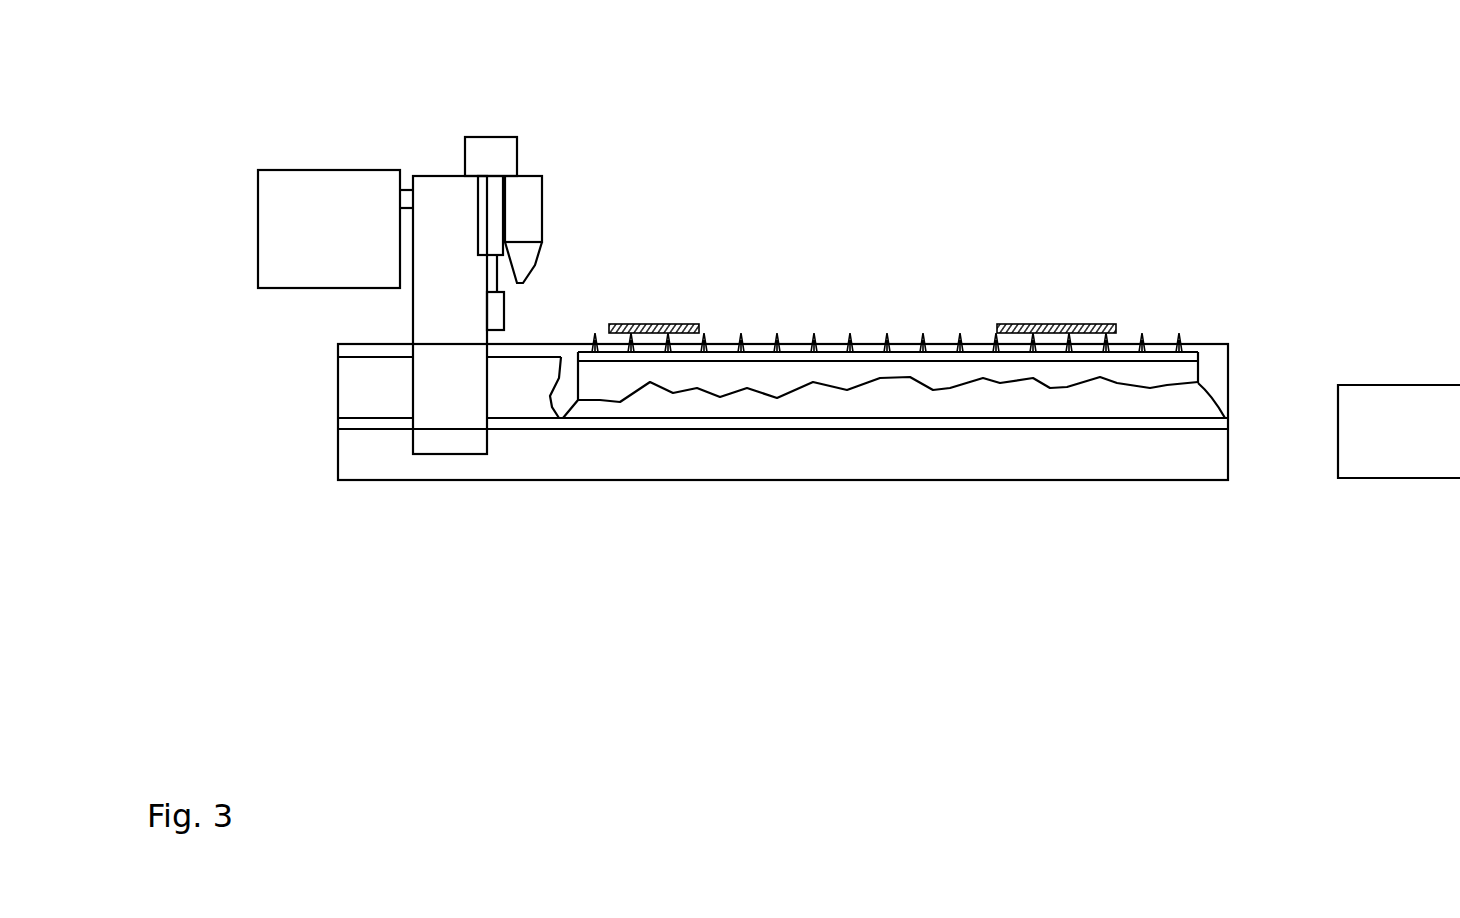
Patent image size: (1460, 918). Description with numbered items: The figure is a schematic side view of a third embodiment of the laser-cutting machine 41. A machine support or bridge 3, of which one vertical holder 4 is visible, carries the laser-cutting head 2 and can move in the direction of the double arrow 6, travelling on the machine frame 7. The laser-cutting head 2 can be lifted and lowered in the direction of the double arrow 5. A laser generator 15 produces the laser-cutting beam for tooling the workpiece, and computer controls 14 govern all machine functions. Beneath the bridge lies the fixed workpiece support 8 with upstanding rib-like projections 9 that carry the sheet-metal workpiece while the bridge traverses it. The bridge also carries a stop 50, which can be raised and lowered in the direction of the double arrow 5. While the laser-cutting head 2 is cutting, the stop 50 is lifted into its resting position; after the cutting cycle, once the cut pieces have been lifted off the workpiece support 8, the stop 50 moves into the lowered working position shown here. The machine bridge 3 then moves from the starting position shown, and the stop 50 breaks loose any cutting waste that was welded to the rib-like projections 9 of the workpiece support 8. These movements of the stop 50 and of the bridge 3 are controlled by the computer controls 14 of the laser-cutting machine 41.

The laser-cutting head 2 is at (512, 228).
The machine support or bridge 3 is at (410, 313).
The vertical holder 4 is at (441, 299).
The double arrow 5 is at (522, 138).
The double arrow 6 is at (490, 127).
The machine frame 7 is at (403, 448).
The workpiece support 8 is at (1208, 362).
The rib-like projections 9 is at (1185, 337).
The computer controls 14 is at (1389, 450).
The laser generator 15 is at (347, 158).
The laser-cutting machine 41 is at (333, 161).
The stop 50 is at (505, 305).